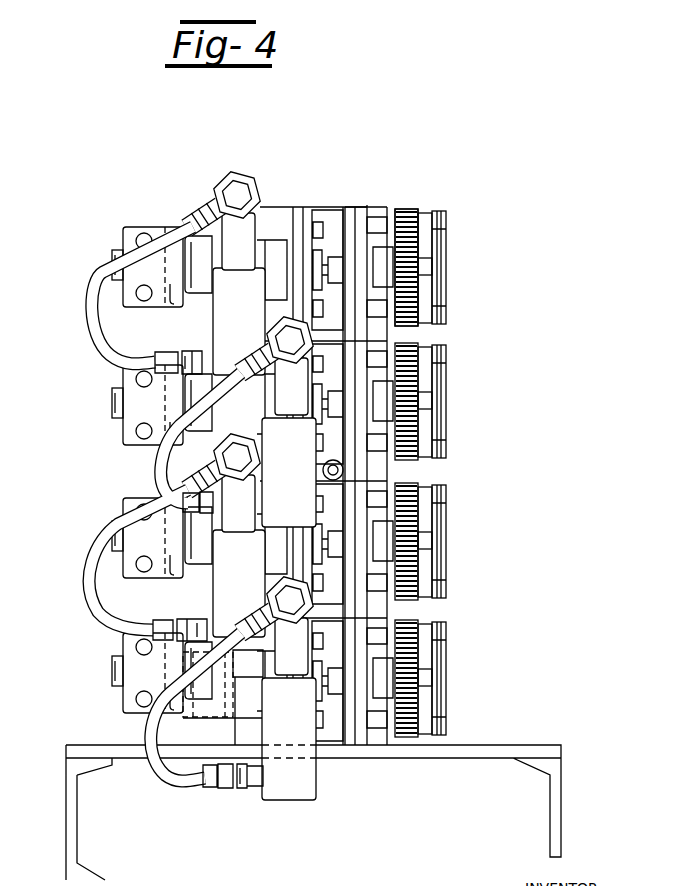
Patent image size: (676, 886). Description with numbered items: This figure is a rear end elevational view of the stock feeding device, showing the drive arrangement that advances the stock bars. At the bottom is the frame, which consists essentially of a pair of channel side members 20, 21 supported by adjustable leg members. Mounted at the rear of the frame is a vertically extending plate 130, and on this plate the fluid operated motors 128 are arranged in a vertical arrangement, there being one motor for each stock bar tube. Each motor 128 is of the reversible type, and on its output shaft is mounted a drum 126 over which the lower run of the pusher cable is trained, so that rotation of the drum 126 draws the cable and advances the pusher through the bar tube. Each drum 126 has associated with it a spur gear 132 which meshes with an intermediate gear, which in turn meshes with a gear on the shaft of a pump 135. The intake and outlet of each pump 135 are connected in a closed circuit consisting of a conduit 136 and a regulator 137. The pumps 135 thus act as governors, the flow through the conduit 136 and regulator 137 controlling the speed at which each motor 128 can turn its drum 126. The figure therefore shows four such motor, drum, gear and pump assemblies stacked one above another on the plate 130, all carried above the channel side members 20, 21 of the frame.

The channel side member 20 is at (563, 787).
The channel side member 21 is at (66, 828).
The drum 126 is at (458, 634).
The fluid operated motor 128 is at (204, 486).
The vertically extending plate 130 is at (363, 212).
The spur gear 132 is at (400, 211).
The pump 135 is at (250, 423).
The conduit 136 is at (103, 347).
The regulator 137 is at (326, 782).